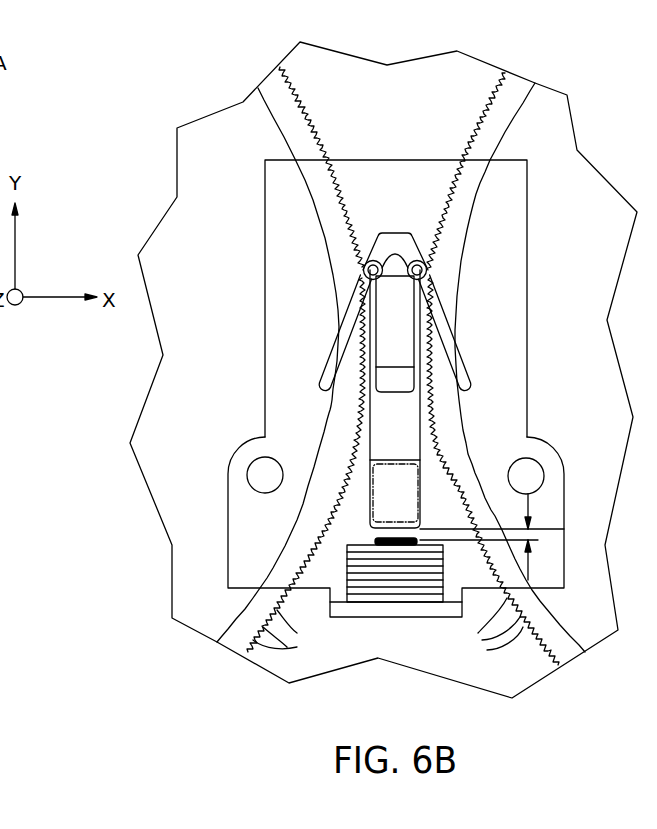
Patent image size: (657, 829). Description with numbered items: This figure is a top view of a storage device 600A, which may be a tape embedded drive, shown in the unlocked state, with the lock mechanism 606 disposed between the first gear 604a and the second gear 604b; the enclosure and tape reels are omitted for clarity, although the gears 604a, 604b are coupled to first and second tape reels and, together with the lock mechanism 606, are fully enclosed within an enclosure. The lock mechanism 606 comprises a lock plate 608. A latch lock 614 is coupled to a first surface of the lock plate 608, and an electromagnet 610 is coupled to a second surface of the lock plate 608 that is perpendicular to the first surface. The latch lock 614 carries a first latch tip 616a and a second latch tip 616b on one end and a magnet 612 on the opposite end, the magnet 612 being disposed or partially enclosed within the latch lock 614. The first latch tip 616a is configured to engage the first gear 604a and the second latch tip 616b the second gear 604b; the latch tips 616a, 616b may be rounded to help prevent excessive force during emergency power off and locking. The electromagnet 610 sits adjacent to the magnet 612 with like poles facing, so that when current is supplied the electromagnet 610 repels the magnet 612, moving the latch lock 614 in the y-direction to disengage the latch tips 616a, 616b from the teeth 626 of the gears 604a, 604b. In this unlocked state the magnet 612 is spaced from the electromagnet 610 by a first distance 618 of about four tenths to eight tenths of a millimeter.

The storage device 600A is at (220, 100).
The first gear 604a is at (290, 113).
The second gear 604b is at (498, 127).
The lock mechanism 606 is at (556, 258).
The lock plate 608 is at (287, 534).
The electromagnet 610 is at (398, 582).
The magnet 612 is at (412, 503).
The latch lock 614 is at (413, 447).
The first latch tip 616a is at (366, 262).
The second latch tip 616b is at (419, 258).
The first distance 618 is at (527, 533).
The teeth 626 is at (388, 630).